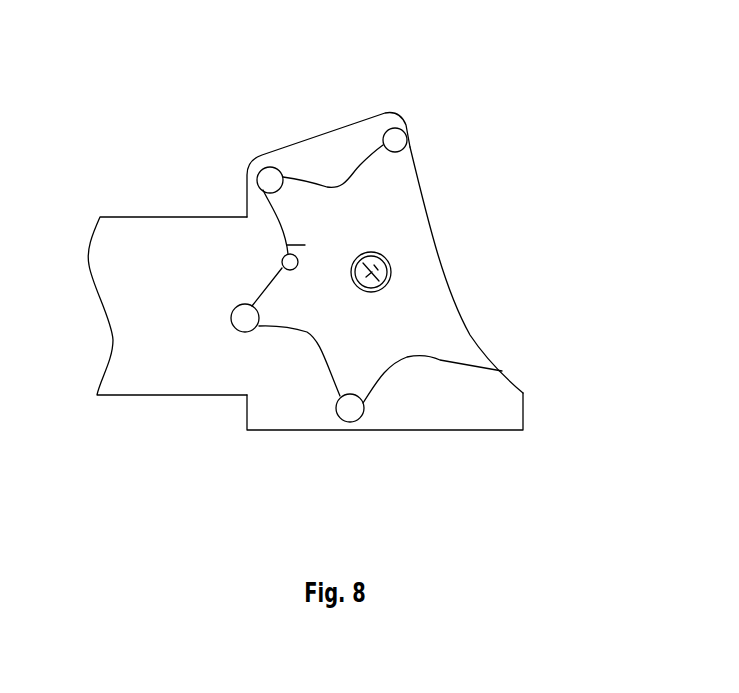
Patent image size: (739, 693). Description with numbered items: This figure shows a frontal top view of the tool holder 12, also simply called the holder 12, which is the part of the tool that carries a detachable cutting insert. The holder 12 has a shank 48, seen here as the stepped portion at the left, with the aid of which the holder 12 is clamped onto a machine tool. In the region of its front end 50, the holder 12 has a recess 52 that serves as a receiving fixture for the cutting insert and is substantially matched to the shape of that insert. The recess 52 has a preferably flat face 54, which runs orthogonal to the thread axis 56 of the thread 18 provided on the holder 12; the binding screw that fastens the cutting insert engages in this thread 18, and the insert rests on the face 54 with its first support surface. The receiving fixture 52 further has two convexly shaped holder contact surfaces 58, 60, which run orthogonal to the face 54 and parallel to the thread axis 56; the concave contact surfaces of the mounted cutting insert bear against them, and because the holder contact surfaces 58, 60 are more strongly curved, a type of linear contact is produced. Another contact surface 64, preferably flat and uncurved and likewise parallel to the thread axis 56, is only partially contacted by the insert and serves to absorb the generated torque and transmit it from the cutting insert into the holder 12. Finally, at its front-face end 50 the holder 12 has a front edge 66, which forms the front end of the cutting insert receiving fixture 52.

The holder 12 is at (455, 107).
The shank 48 is at (157, 362).
The front end 50 is at (587, 266).
The recess 52 is at (397, 185).
The face 54 is at (318, 210).
The thread axis 56 is at (381, 255).
The thread 18 is at (391, 268).
The holder contact surface 58 is at (280, 270).
The holder contact surface 60 is at (323, 348).
The contact surface 64 is at (450, 358).
The front edge 66 is at (457, 303).